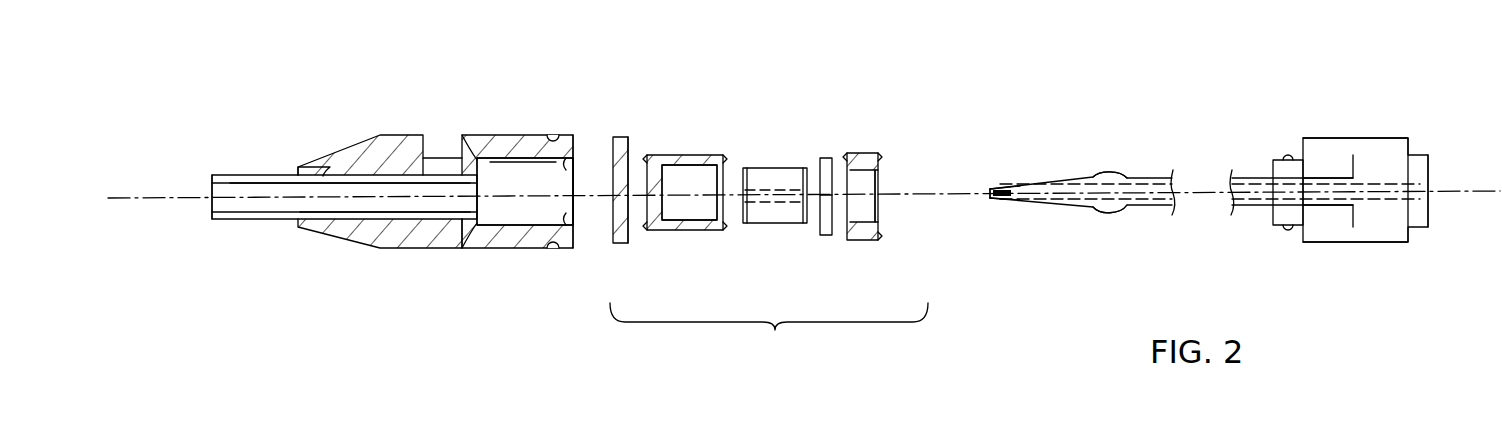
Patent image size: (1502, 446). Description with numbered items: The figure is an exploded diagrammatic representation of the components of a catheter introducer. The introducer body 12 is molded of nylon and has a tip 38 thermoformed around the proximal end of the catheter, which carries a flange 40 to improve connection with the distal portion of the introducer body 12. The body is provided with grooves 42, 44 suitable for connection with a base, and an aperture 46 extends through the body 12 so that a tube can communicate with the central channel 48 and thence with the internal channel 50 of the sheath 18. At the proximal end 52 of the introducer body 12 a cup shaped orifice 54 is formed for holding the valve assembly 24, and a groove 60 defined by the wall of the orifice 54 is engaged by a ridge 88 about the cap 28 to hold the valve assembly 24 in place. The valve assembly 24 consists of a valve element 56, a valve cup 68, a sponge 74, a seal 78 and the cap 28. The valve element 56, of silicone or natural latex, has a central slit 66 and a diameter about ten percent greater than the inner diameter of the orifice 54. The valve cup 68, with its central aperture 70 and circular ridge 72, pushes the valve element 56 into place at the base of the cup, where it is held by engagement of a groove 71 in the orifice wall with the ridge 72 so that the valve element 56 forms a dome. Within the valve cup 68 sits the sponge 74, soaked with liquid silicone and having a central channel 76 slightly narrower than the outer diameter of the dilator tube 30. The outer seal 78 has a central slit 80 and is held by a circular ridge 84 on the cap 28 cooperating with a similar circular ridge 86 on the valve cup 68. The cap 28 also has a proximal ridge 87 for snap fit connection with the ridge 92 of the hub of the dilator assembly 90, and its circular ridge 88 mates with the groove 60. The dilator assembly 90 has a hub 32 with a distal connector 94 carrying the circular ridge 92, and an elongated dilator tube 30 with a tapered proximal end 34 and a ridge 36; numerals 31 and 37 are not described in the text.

The introducer body 12 is at (512, 134).
The sheath 18 is at (243, 221).
The valve assembly 24 is at (769, 334).
The cap 28 is at (880, 165).
The dilator tube 30 is at (1150, 179).
The cannula end 31 is at (1409, 195).
The hub 32 is at (1373, 154).
The tapered proximal end 34 is at (1010, 190).
The ridge 36 is at (1110, 173).
The tip opening 37 is at (989, 197).
The tip 38 is at (303, 170).
The flange 40 is at (332, 225).
The groove 42 is at (393, 136).
The groove 44 is at (554, 134).
The aperture 46 is at (429, 150).
The central channel 48 is at (374, 203).
The internal channel 50 is at (224, 197).
The proximal end 52 is at (574, 240).
The cup shaped orifice 54 is at (486, 213).
The valve element 56 is at (618, 245).
The groove 60 is at (562, 221).
The central slit 66 is at (631, 170).
The valve cup 68 is at (690, 232).
The central aperture 70 is at (689, 192).
The groove 71 is at (468, 158).
The circular ridge 72 is at (648, 157).
The sponge 74 is at (767, 213).
The central channel 76 is at (763, 186).
The seal 78 is at (826, 228).
The central slit 80 is at (834, 200).
The circular ridge 84 is at (847, 165).
The circular ridge 86 is at (725, 156).
The proximal ridge 87 is at (880, 178).
The circular ridge 88 is at (876, 152).
The dilator assembly 90 is at (1325, 250).
The circular ridge 92 is at (1289, 157).
The distal connector 94 is at (1274, 166).